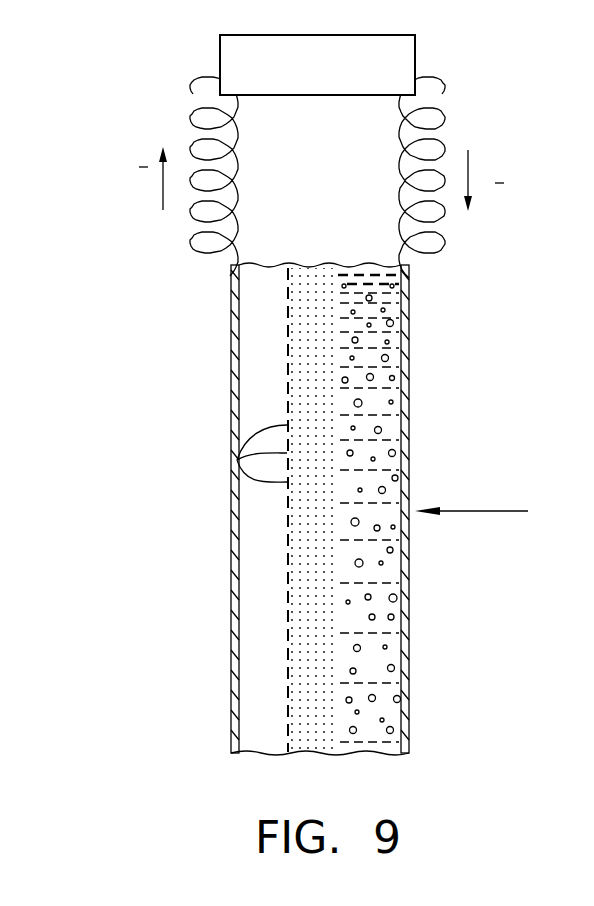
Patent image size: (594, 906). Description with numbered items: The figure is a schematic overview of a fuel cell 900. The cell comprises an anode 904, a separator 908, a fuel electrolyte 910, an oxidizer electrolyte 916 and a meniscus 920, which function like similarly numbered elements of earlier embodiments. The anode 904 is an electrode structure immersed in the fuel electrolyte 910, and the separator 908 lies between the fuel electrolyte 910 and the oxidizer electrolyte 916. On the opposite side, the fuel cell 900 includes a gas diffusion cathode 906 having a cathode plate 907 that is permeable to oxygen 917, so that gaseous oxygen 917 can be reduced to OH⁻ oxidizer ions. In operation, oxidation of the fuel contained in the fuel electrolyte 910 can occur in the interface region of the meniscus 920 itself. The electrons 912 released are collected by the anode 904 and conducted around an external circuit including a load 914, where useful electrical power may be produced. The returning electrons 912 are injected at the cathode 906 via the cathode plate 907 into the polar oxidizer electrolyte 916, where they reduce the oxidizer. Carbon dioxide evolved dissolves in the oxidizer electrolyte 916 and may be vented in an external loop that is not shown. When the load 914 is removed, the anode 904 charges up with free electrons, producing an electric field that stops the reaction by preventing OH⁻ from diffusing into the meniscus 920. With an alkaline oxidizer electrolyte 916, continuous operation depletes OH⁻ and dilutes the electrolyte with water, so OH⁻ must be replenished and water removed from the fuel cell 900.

The fuel cell 900 is at (158, 522).
The anode 904 is at (230, 321).
The gas diffusion cathode 906 is at (350, 402).
The cathode plate 907 is at (409, 327).
The separator 908 is at (287, 302).
The fuel electrolyte 910 is at (268, 692).
The electrons 912 is at (160, 195).
The load 914 is at (268, 95).
The oxidizer electrolyte 916 is at (320, 740).
The oxygen 917 is at (458, 512).
The meniscus 920 is at (237, 460).